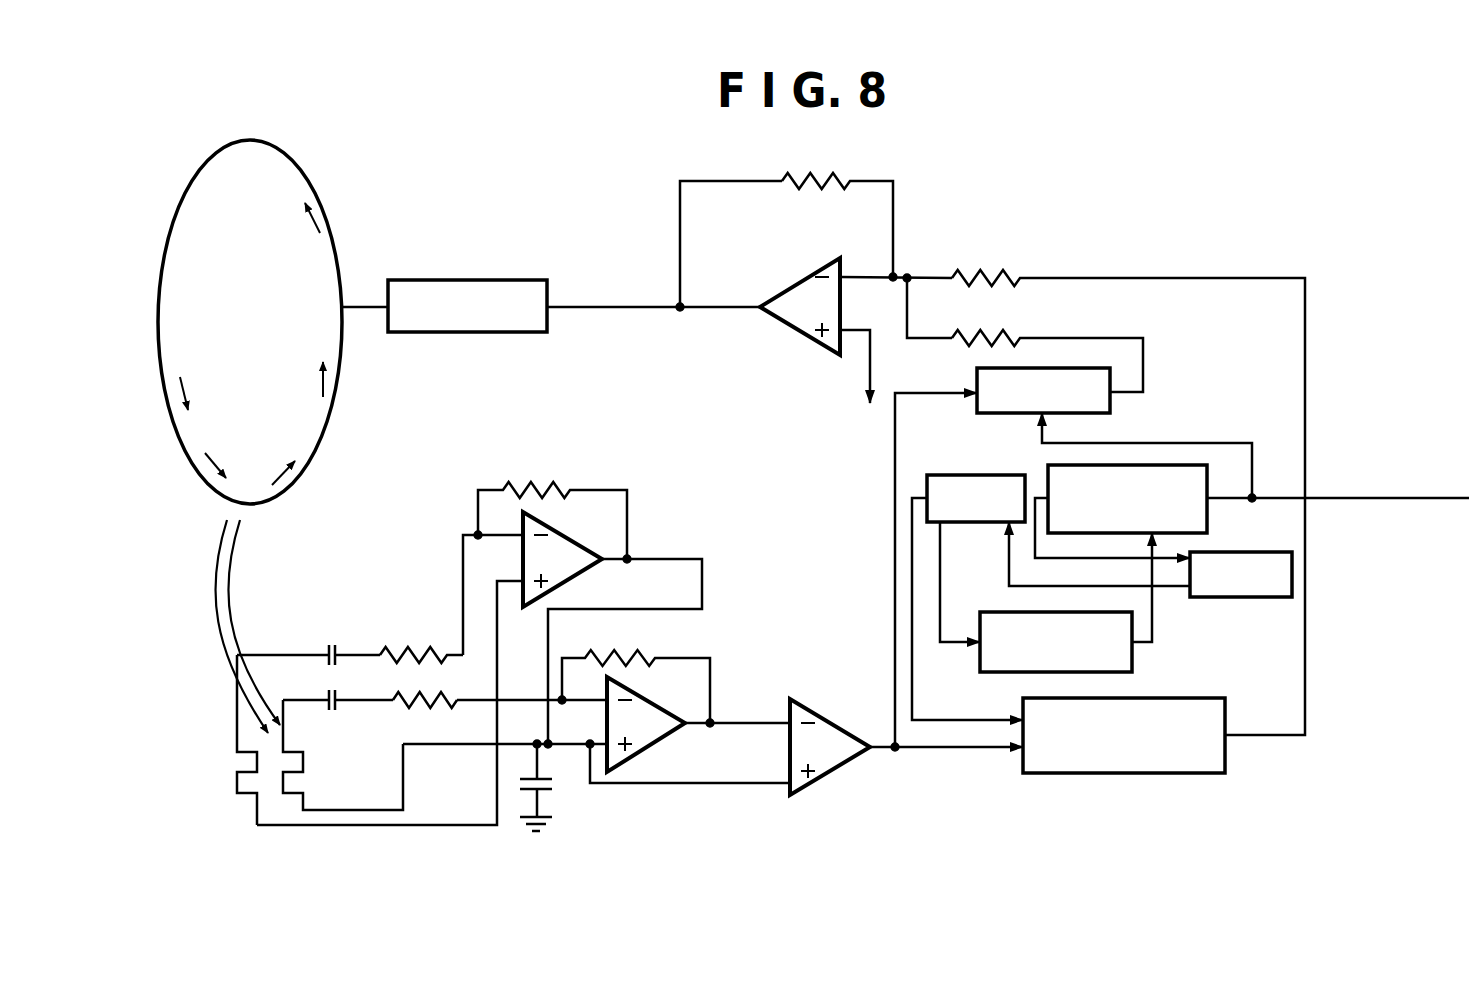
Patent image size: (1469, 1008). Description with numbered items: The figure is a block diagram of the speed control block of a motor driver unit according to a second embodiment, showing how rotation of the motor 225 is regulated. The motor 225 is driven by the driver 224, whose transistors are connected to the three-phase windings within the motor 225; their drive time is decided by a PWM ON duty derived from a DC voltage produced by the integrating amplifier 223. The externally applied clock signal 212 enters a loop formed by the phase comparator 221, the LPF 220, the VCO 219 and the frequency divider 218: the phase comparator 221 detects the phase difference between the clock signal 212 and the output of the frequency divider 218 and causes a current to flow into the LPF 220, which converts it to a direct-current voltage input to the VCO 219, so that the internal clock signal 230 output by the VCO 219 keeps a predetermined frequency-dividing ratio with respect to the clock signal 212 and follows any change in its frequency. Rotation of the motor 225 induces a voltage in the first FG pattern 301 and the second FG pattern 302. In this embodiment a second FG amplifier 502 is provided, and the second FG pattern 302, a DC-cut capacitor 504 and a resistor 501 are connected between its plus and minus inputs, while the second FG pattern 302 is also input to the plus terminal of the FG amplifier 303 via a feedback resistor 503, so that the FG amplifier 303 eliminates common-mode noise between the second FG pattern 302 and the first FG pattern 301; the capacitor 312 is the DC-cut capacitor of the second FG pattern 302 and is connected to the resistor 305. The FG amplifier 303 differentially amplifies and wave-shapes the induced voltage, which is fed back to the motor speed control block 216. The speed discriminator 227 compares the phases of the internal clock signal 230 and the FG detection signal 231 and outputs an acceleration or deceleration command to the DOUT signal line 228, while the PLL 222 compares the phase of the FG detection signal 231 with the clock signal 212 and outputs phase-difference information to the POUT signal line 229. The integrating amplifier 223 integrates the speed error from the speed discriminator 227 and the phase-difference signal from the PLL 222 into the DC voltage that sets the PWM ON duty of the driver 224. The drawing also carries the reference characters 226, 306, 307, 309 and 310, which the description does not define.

The motor 225 is at (325, 210).
The driver 224 is at (516, 279).
The integrating amplifier 223 is at (800, 335).
The PLL 222 is at (976, 371).
The DOUT signal line 228 is at (1230, 278).
The POUT signal line 229 is at (1114, 338).
The VCO 219 is at (950, 475).
The phase comparator 221 is at (1210, 522).
The clock signal 212 is at (1362, 500).
The LPF 220 is at (1268, 598).
The frequency divider 218 is at (1133, 657).
The internal clock signal 230 is at (948, 720).
The FG detection signal 231 is at (957, 748).
The speed discriminator 227 is at (1122, 774).
The motor speed control block 216 is at (832, 776).
The output signal line 309 is at (758, 722).
The FG amplifier 303 is at (645, 750).
The feedback resistor 306 is at (652, 648).
The input node 310 is at (566, 658).
The reference signal line 307 is at (664, 785).
The second FG amplifier 502 is at (585, 549).
The feedback resistor 503 is at (540, 481).
The DC-cut capacitor 504 is at (332, 643).
The resistor 501 is at (417, 643).
The capacitor 312 is at (336, 718).
The resistor 305 is at (432, 689).
The second FG pattern 302 is at (243, 763).
The first FG pattern 301 is at (298, 781).
The rotation direction 226 is at (225, 630).